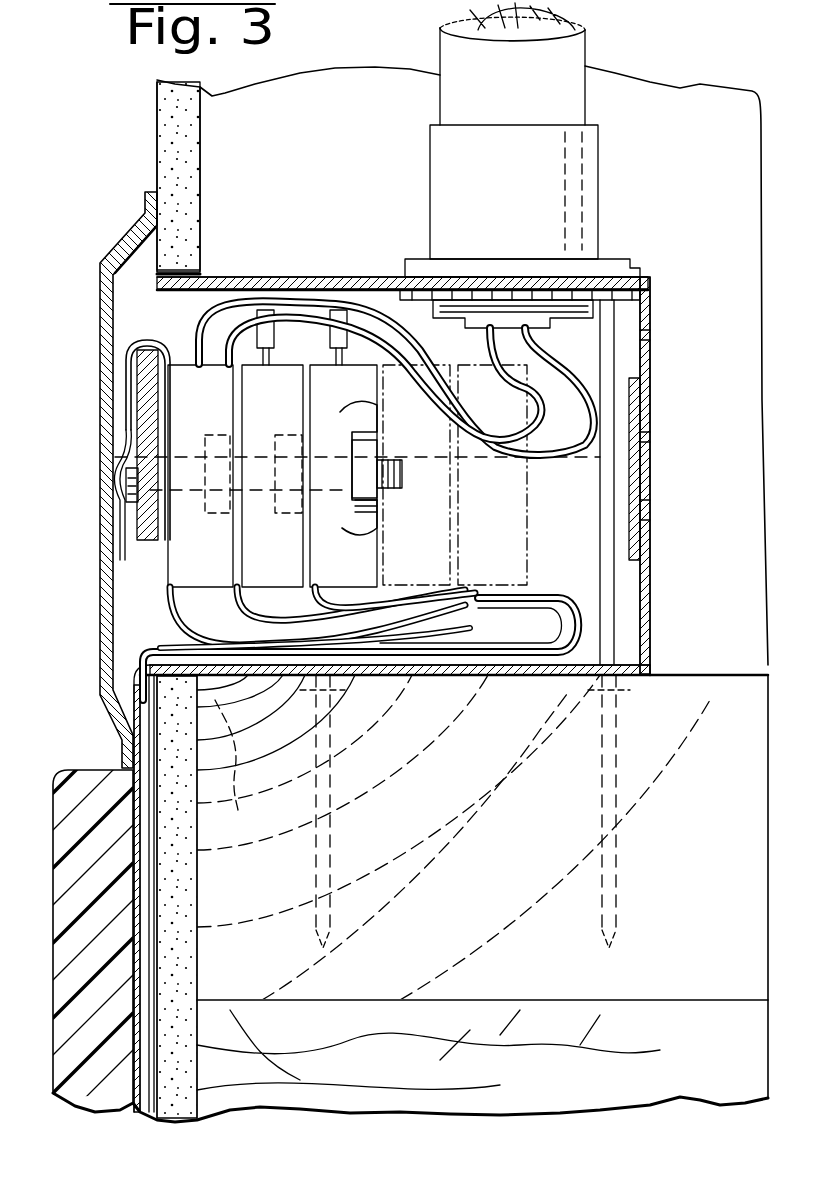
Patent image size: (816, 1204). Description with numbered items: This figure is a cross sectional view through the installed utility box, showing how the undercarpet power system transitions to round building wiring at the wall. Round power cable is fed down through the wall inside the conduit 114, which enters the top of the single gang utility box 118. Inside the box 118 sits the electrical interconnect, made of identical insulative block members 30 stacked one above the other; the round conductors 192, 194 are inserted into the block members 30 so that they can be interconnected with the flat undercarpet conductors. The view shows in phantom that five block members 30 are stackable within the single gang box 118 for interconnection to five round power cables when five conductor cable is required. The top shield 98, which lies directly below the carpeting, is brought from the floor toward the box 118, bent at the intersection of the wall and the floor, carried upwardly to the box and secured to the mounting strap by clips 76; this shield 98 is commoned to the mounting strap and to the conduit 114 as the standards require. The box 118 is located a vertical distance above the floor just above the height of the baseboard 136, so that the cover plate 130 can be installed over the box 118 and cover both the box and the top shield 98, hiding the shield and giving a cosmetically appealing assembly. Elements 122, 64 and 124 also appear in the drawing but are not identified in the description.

The conduit 114 is at (452, 52).
The cable connector housing 122 is at (445, 185).
The single gang box 118 is at (637, 306).
The cover plate 130 is at (100, 296).
The round conductor 194 is at (242, 300).
The round conductor 192 is at (373, 278).
The clips 76 is at (147, 345).
The latch member 64 is at (130, 466).
The block members 30 is at (286, 578).
The top shield 98 is at (135, 648).
The mounting base block 124 is at (700, 690).
The baseboards 136 is at (53, 775).